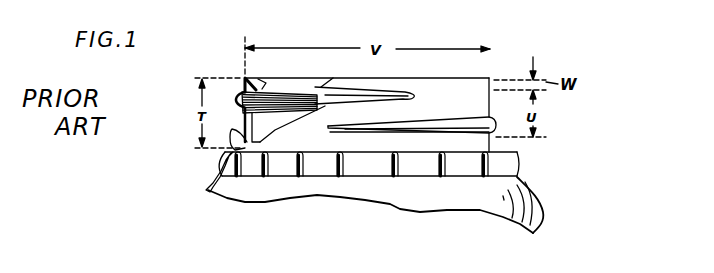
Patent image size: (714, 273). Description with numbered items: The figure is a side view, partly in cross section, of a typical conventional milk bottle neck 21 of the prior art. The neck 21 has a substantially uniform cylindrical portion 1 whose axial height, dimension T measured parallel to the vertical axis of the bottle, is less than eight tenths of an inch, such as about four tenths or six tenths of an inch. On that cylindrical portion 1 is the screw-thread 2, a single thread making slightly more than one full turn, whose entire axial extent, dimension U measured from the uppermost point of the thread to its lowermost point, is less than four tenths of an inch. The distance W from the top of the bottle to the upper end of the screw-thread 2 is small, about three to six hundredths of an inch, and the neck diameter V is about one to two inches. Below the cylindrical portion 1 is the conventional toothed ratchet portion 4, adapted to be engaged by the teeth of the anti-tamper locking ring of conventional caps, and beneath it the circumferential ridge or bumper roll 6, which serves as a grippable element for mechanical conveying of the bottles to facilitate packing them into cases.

The cylindrical portion 1 is at (479, 94).
The screw-thread 2 is at (444, 123).
The toothed ratchet portion 4 is at (517, 160).
The bumper roll 6 is at (543, 197).
The neck 21 is at (206, 190).